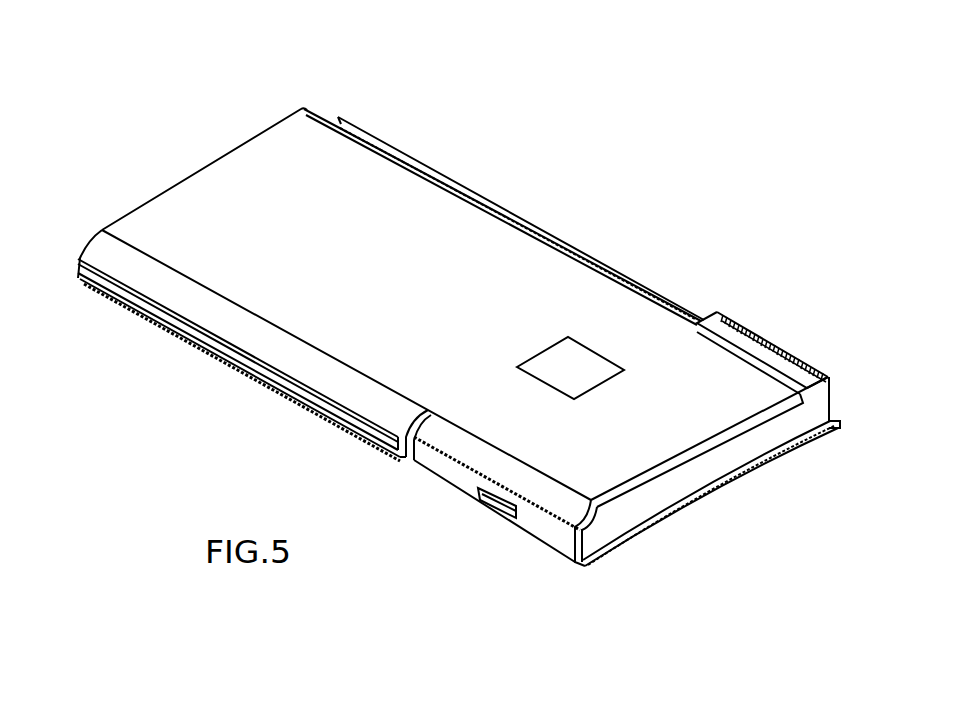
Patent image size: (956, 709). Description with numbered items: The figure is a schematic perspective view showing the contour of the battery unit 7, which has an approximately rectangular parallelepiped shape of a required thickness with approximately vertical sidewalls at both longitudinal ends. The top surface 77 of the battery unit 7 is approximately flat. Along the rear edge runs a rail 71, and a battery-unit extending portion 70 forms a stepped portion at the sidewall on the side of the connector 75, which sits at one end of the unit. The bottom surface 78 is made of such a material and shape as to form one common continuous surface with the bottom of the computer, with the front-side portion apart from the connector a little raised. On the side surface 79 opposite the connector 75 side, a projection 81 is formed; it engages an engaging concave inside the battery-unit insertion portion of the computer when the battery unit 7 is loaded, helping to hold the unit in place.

The battery unit 7 is at (173, 221).
The top surface 77 is at (257, 162).
The rail 71 is at (410, 158).
The battery-unit extending portion 70 is at (527, 225).
The connector 75 is at (773, 348).
The side surface 79 is at (280, 359).
The bottom surface 78 is at (763, 467).
The projection 81 is at (477, 498).